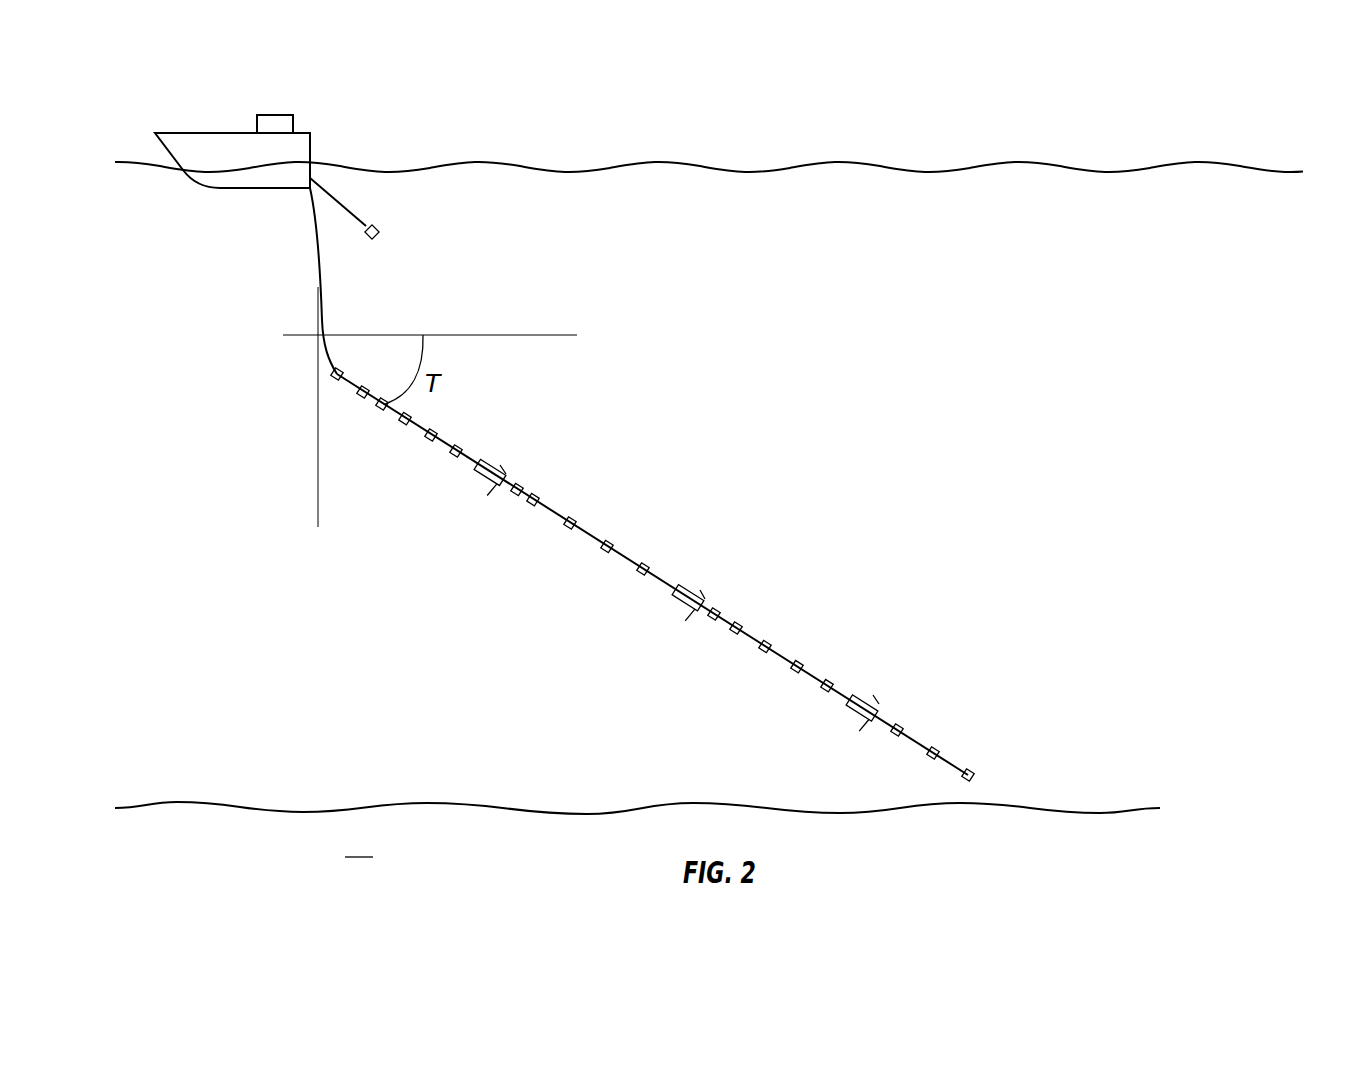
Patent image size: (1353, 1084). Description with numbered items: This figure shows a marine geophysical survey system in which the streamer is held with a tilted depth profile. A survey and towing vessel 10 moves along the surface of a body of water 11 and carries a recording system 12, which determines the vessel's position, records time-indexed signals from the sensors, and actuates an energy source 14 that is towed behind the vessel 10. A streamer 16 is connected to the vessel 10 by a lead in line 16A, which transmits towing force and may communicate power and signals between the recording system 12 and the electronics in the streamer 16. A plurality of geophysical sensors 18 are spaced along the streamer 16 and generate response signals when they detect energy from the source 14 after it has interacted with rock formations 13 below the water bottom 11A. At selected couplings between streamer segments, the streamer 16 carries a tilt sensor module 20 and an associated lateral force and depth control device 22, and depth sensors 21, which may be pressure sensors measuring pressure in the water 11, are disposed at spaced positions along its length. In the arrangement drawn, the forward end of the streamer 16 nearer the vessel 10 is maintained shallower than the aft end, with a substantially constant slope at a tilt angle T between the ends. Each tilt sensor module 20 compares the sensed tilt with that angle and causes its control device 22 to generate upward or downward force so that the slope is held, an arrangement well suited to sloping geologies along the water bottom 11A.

The survey and towing vessel 10 is at (310, 133).
The body of water 11 is at (538, 233).
The water bottom 11A is at (307, 812).
The recording system 12 is at (273, 115).
The rock formations 13 is at (361, 843).
The energy source 14 is at (378, 231).
The streamer 16 is at (660, 578).
The lead in line 16A is at (323, 265).
The geophysical sensors 18 is at (377, 410).
The tilt sensor module 20 is at (487, 463).
The depth sensors 21 is at (362, 390).
The lateral force and depth (LFD) control device 22 is at (503, 472).